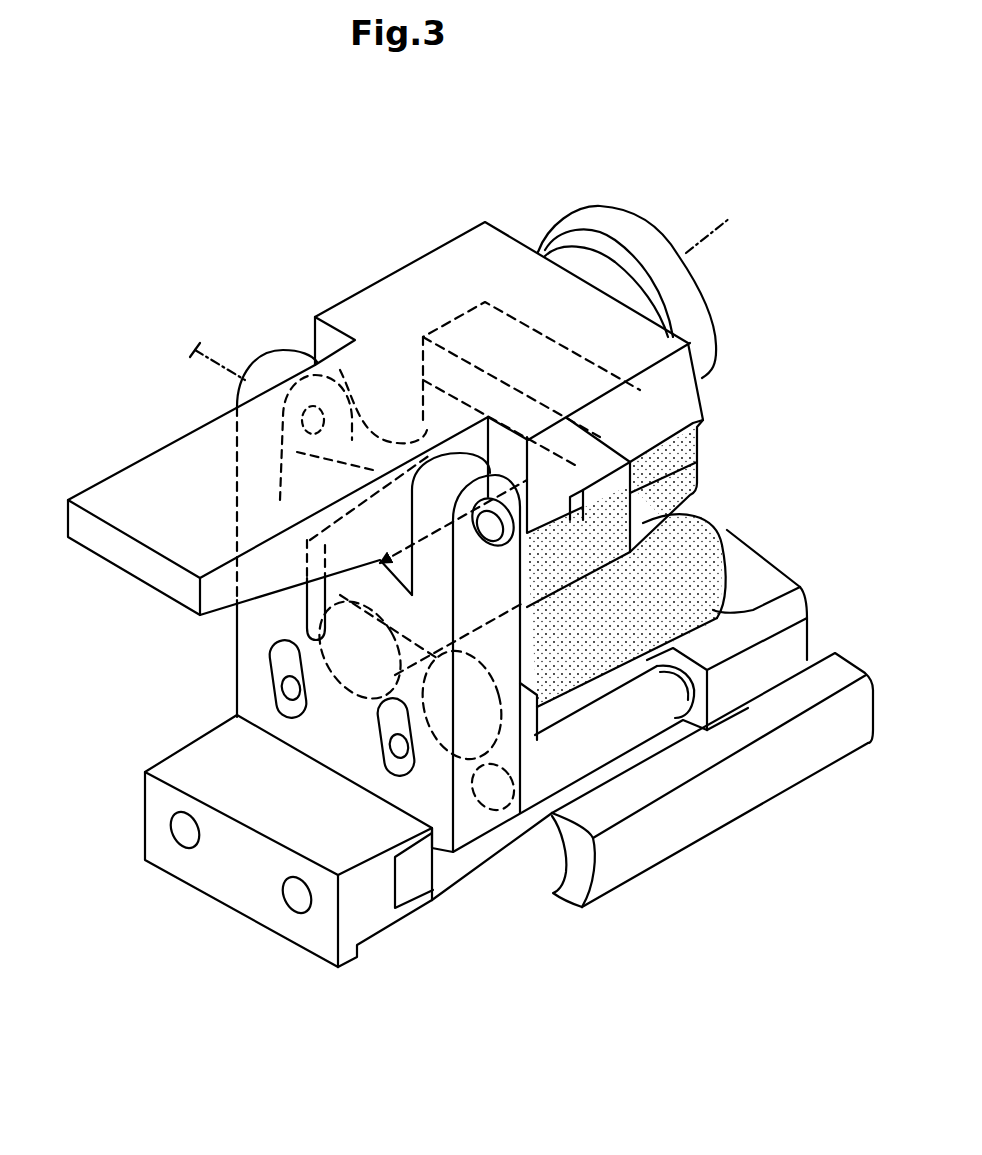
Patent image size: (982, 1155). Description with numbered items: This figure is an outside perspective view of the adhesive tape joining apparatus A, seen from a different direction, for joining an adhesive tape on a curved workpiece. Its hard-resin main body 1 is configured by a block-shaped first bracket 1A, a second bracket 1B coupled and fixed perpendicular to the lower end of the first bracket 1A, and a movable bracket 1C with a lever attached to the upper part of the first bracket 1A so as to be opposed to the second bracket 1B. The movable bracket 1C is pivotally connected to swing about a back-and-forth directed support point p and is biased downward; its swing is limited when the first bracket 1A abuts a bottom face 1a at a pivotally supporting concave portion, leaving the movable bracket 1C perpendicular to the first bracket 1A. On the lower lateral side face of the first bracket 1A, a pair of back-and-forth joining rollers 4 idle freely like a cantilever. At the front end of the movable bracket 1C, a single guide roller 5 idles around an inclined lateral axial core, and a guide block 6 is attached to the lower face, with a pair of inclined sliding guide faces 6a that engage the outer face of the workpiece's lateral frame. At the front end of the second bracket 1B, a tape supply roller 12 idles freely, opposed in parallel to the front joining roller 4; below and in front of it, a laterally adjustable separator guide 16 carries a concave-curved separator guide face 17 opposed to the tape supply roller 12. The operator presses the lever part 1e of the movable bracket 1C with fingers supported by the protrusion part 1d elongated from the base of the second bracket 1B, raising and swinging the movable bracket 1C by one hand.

The adhesive tape joining apparatus A is at (207, 275).
The main body 1 is at (232, 652).
The first bracket 1A is at (242, 683).
The second bracket 1B is at (793, 638).
The movable bracket 1C is at (395, 287).
The bottom face 1a is at (403, 571).
The protrusion part 1d is at (255, 915).
The lever part 1e is at (117, 557).
The joining roller 4 is at (760, 577).
The guide roller 5 is at (636, 216).
The guide block 6 is at (687, 475).
The sliding guide face 6a is at (717, 510).
The tape supply roller 12 is at (533, 788).
The separator guide 16 is at (732, 810).
The separator guide face 17 is at (556, 872).
The support point p is at (211, 373).